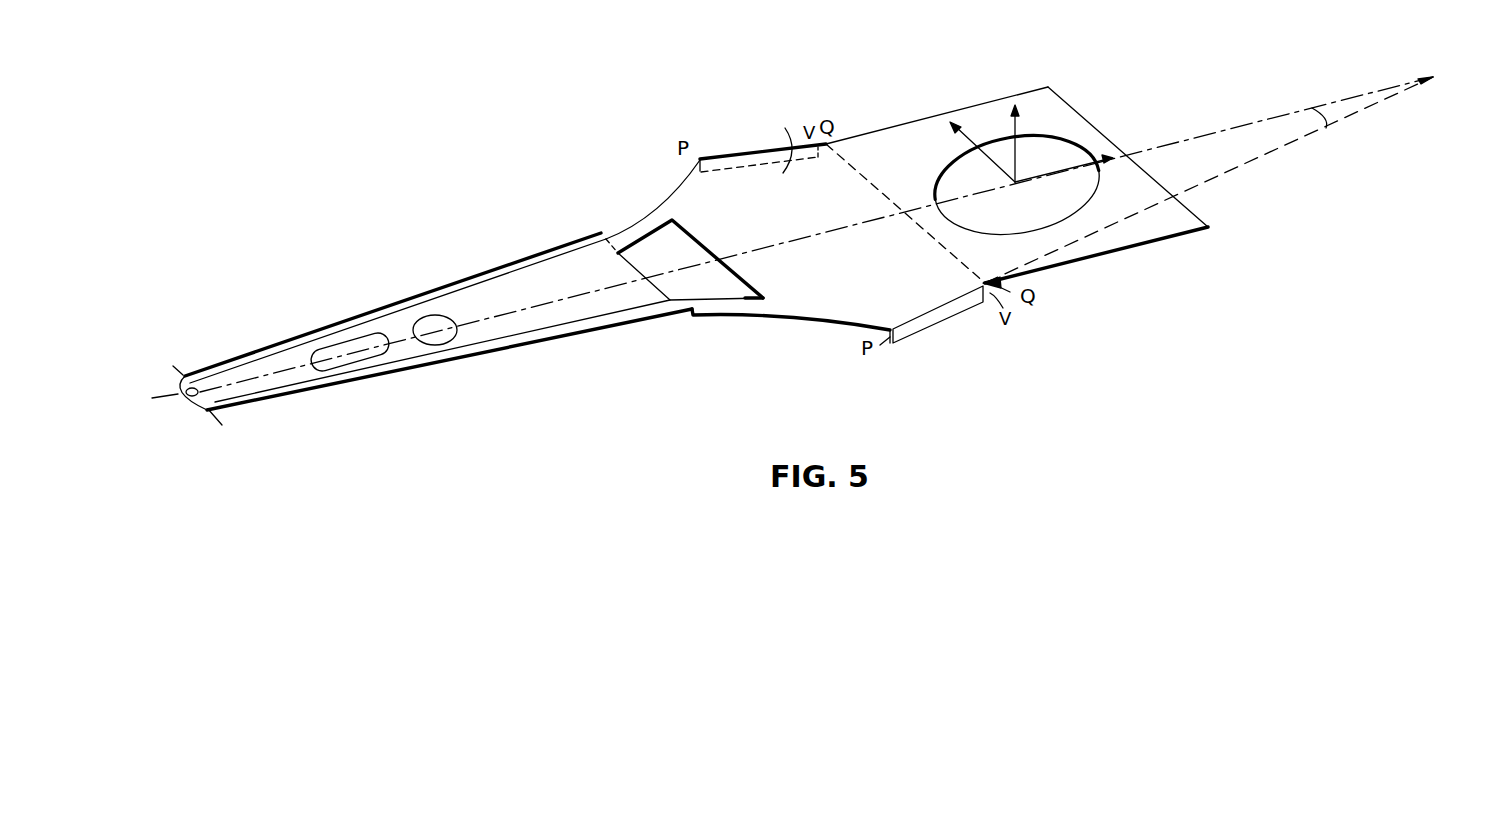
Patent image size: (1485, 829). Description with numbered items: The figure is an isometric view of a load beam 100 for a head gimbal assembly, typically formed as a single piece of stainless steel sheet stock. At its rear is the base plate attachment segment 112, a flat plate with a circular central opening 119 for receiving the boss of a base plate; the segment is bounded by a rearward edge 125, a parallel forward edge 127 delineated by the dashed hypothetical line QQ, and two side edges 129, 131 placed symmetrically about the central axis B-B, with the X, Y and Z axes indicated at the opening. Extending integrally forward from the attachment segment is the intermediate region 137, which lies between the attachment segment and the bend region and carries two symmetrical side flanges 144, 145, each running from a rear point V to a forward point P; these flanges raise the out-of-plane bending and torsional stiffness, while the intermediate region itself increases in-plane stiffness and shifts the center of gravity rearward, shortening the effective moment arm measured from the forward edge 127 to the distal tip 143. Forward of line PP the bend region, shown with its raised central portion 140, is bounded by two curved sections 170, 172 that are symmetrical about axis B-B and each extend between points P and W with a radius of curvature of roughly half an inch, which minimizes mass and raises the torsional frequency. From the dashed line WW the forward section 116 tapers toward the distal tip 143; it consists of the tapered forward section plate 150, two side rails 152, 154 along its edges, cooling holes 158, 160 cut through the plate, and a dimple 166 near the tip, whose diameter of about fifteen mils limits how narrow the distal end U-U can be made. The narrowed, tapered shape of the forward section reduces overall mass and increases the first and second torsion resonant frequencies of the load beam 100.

The load beam 100 is at (712, 122).
The base plate attachment segment 112 is at (1017, 176).
The forward section 116 is at (421, 321).
The circular central opening 119 is at (990, 140).
The rearward edge 125 is at (1185, 203).
The forward edge 127 is at (852, 147).
The side edge 129 is at (1022, 90).
The side edge 131 is at (1100, 258).
The intermediate region 137 is at (793, 134).
The bend region 140 is at (734, 298).
The distal tip 143 is at (178, 401).
The side flange 144 is at (956, 320).
The side flange 145 is at (745, 153).
The tapered forward section plate 150 is at (383, 344).
The side rail 152 is at (568, 336).
The side rail 154 is at (547, 253).
The cooling hole 158 is at (440, 346).
The cooling hole 160 is at (363, 364).
The dimple 166 is at (188, 383).
The curved section 170 is at (796, 322).
The curved section 172 is at (670, 190).